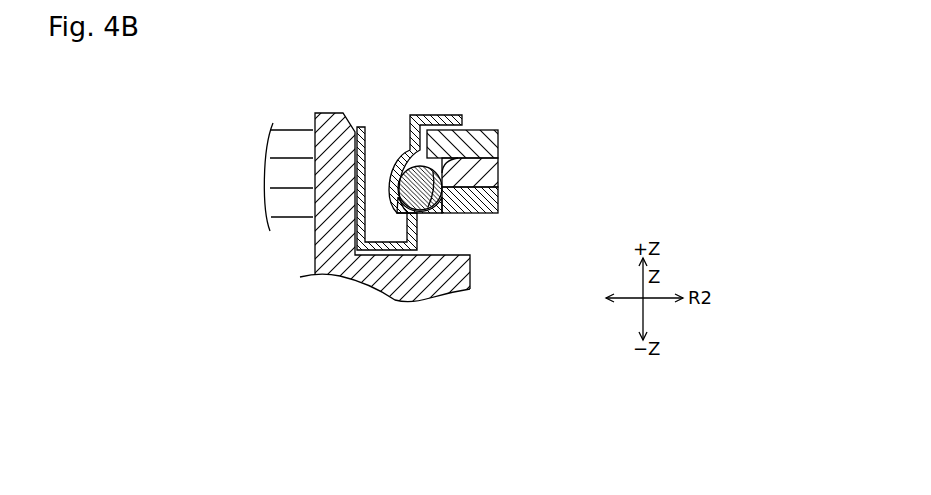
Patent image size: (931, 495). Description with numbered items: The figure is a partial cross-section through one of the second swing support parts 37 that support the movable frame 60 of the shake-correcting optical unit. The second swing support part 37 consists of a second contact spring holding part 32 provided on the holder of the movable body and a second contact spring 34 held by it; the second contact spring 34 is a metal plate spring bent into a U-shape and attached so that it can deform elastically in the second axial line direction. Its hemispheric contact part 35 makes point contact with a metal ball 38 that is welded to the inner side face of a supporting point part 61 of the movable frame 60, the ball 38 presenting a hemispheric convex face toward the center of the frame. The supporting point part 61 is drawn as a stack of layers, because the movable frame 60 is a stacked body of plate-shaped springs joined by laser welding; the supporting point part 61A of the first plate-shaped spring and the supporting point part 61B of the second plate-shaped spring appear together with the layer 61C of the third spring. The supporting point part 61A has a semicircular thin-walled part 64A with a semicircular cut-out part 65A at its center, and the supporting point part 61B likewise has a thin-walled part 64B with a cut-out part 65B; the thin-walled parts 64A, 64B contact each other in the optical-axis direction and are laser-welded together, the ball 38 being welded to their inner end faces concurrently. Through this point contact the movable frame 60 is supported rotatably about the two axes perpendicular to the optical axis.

The second swing support part 37 is at (415, 67).
The second contact spring holding part 32 is at (350, 121).
The second contact spring 34 is at (409, 143).
The hemispheric contact part 35 is at (404, 194).
The ball 38 is at (453, 160).
The thin-walled part 64A is at (452, 215).
The thin-walled part 64B is at (499, 132).
The cut-out part 65A is at (433, 201).
The cut-out part 65B is at (420, 186).
The supporting point part 61 is at (590, 160).
The movable frame 60 is at (542, 181).
The supporting point part 61A is at (497, 207).
The supporting point part 61B is at (497, 177).
The gear third layer 61C is at (497, 150).